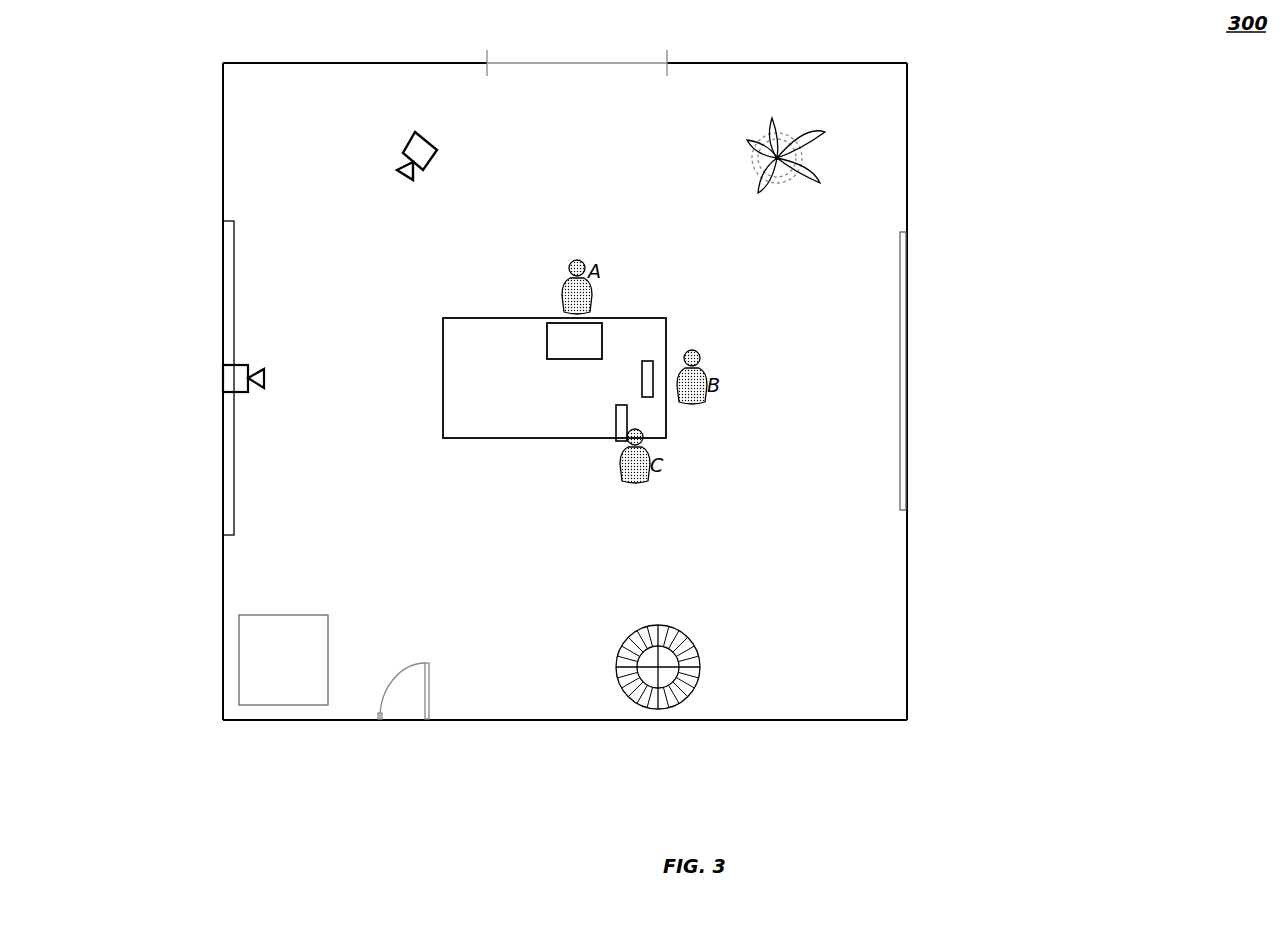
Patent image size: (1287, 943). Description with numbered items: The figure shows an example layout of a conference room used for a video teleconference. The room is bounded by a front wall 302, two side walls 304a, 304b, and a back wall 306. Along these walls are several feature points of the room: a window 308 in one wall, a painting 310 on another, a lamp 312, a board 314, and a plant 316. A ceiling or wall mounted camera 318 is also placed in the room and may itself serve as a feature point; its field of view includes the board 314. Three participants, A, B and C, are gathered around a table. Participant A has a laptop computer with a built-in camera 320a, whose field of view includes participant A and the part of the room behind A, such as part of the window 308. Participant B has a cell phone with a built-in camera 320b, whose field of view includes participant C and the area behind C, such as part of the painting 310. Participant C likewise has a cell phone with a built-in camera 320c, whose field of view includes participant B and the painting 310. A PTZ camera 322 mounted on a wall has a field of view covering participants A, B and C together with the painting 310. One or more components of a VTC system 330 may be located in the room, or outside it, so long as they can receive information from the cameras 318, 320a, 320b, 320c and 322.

The front wall 302 is at (566, 388).
The side wall 304a is at (243, 72).
The side wall 304b is at (473, 720).
The back wall 306 is at (907, 195).
The window 308 is at (565, 63).
The painting 310 is at (906, 345).
The lamp 312 is at (697, 640).
The board 314 is at (227, 283).
The plant 316 is at (800, 132).
The ceiling or wall mounted camera 318 is at (437, 142).
The laptop computer with built-in camera 320a is at (593, 322).
The cell phone with built-in camera 320b is at (645, 360).
The cell phone with built-in camera 320c is at (616, 430).
The PTZ camera 322 is at (264, 367).
The VTC system 330 is at (283, 660).